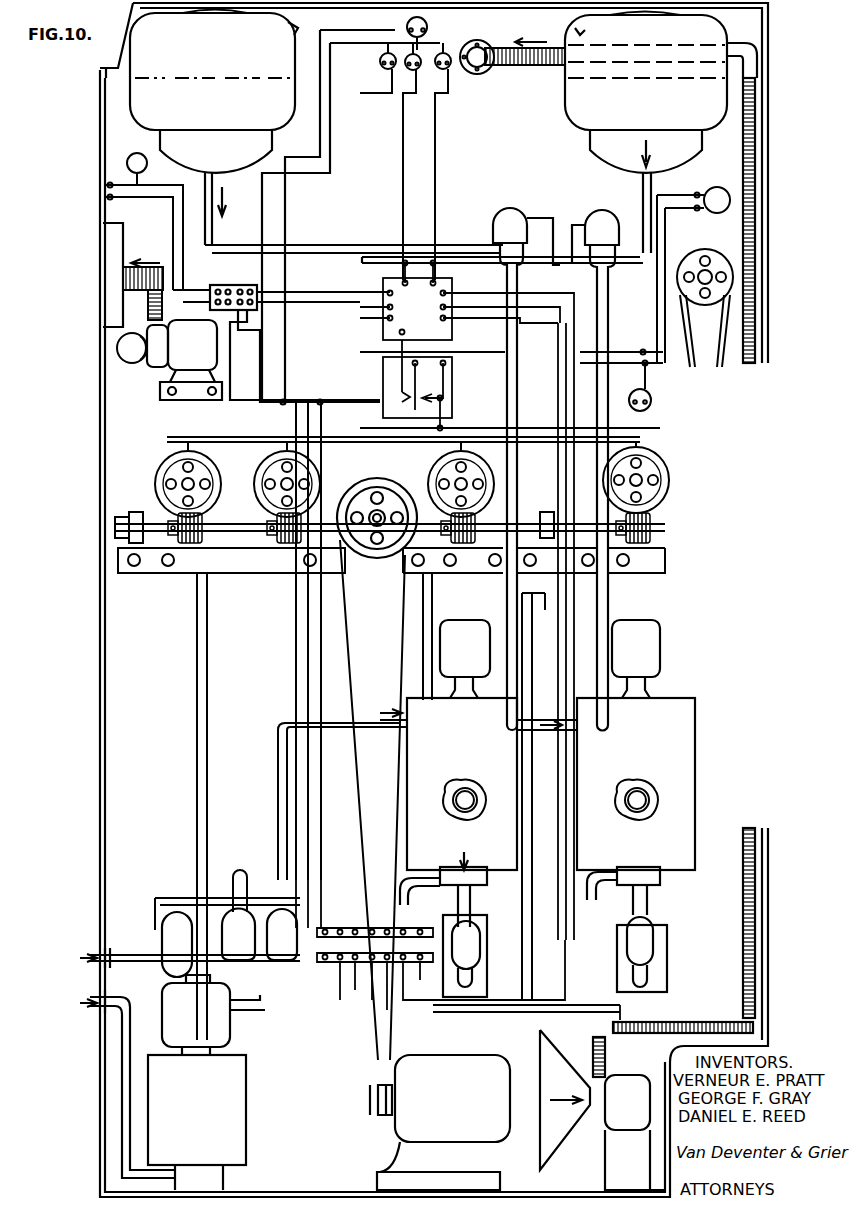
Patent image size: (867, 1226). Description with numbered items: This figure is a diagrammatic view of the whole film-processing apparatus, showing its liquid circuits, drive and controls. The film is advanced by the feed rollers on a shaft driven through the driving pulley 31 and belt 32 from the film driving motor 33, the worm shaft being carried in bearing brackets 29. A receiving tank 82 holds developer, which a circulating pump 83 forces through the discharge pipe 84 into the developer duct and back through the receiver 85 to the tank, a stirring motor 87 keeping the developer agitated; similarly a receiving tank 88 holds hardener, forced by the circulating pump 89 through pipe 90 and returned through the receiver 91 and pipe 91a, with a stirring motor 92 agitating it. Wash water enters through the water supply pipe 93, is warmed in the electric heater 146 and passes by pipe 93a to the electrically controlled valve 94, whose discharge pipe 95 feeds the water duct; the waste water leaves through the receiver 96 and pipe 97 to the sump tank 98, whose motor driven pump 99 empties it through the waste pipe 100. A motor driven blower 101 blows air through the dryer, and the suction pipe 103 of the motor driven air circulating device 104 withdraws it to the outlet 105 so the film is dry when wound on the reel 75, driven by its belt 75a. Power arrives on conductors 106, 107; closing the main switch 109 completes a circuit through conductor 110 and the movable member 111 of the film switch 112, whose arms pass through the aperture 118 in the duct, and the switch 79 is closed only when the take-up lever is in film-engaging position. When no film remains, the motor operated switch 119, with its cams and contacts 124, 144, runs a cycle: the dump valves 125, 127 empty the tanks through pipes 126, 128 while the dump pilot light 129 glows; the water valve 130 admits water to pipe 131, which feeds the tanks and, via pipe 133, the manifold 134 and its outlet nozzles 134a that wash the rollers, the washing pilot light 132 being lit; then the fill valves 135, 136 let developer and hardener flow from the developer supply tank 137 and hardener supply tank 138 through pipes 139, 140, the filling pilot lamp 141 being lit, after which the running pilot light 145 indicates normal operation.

The hardener supply tank 138 is at (214, 128).
The developer supply tank 137 is at (646, 133).
The washing pilot light 132 is at (482, 45).
The filling pilot lamp 141 is at (427, 25).
The running pilot light 145 is at (373, 68).
The dump pilot light 129 is at (410, 72).
The fill valve 136 is at (526, 456).
The fill valve 135 is at (612, 200).
The pipe 140 is at (512, 380).
The switch 79 is at (693, 266).
The reel 75 is at (715, 254).
The belt 75a is at (702, 372).
The pipe 139 is at (608, 395).
The aperture 118 is at (648, 408).
The main switch 109 is at (127, 161).
The conductor 106 is at (144, 226).
The conductor 107 is at (123, 198).
The outlet 105 is at (117, 243).
The motor driven air circulating device 104 is at (268, 345).
The suction pipe 103 is at (130, 363).
The motor operated switch 119 is at (445, 330).
The conductor 110 is at (460, 355).
The film switch 112 is at (452, 400).
The movable member 111 is at (437, 380).
The contact 124 is at (402, 405).
The contact 144 is at (435, 406).
The manifold 134 is at (532, 448).
The outlet nozzles 134a is at (285, 450).
The driving pulley 31 is at (372, 560).
The belt 32 is at (380, 630).
The receiver 96 is at (231, 560).
The receiver 91 is at (534, 560).
The receiver 85 is at (647, 562).
The bearing brackets 29 is at (548, 512).
The pipe 133 is at (562, 506).
The pipe 91a is at (432, 602).
The pipe 97 is at (207, 700).
The pipe 131 is at (280, 786).
The stirring motor 92 is at (465, 659).
The stirring motor 87 is at (636, 659).
The receiving tank 88 is at (478, 784).
The receiving tank 82 is at (636, 784).
The circulating pump 89 is at (487, 878).
The pipe 90 is at (428, 878).
The dump valve 127 is at (476, 940).
The pipe 128 is at (470, 982).
The circulating pump 83 is at (656, 891).
The discharge pipe 84 is at (592, 900).
The dump valve 125 is at (647, 940).
The pipe 126 is at (645, 983).
The discharge pipe 95 is at (240, 862).
The electrically controlled valve 94 is at (238, 935).
The water valve 130 is at (283, 934).
The electric heater 146 is at (178, 944).
The water supply pipe 93 is at (190, 950).
The pipe 93a is at (218, 930).
The waste pipe 100 is at (128, 977).
The motor driven pump 99 is at (213, 1011).
The sump tank 98 is at (197, 1118).
The film driving motor 33 is at (440, 1122).
The motor driven blower 101 is at (602, 1110).